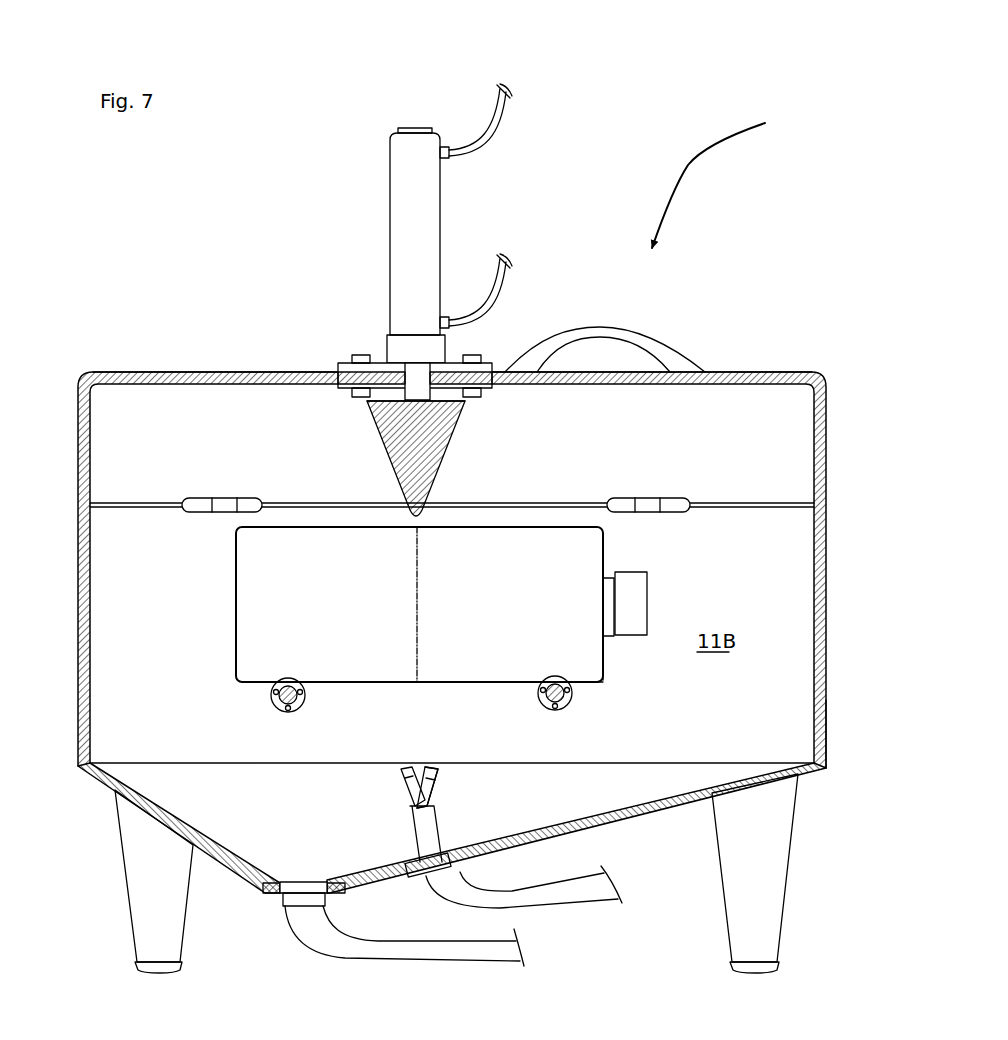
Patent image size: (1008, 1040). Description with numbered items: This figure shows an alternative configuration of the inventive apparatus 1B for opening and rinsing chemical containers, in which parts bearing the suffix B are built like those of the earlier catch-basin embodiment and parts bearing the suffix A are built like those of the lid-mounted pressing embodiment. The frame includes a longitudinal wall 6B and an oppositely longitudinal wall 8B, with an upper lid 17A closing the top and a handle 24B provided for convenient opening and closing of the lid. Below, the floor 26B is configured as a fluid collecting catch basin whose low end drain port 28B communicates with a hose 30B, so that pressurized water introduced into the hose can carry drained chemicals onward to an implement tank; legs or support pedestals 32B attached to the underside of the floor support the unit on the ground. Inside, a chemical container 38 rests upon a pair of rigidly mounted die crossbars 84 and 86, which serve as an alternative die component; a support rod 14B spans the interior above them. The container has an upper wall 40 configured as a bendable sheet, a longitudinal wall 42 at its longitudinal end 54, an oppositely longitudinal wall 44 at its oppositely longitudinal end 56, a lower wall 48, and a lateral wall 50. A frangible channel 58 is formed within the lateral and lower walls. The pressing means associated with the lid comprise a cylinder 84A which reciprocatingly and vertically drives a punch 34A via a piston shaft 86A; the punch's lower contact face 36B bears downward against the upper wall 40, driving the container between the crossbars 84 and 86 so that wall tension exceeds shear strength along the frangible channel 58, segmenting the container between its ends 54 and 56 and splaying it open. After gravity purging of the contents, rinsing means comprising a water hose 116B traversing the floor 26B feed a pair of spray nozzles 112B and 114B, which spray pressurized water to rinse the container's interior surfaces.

The alternative apparatus 1B is at (721, 178).
The longitudinal wall 6B is at (78, 662).
The oppositely longitudinal wall 8B is at (826, 642).
The support rod 14B is at (222, 505).
The upper lid 17A is at (190, 372).
The handle 24B is at (625, 330).
The floor 26B is at (640, 816).
The drain port 28B is at (300, 888).
The hose 30B is at (402, 955).
The support pedestal 32B is at (766, 877).
The punch 34A is at (440, 466).
The lower contact face 36B is at (422, 527).
The chemical container 38 is at (616, 670).
The upper wall 40 is at (425, 603).
The longitudinal wall 42 is at (236, 615).
The oppositely longitudinal wall 44 is at (605, 565).
The lower wall 48 is at (376, 686).
The lateral wall 50 is at (473, 630).
The longitudinal end 54 is at (255, 656).
The oppositely longitudinal end 56 is at (585, 655).
The frangible channel 58 is at (415, 617).
The die crossbar 84 is at (287, 698).
The die crossbar 86 is at (556, 698).
The cylinder 84A is at (406, 255).
The piston shaft 86A is at (410, 380).
The spray nozzle 112B is at (410, 783).
The spray nozzle 114B is at (432, 784).
The water hose 116B is at (565, 902).